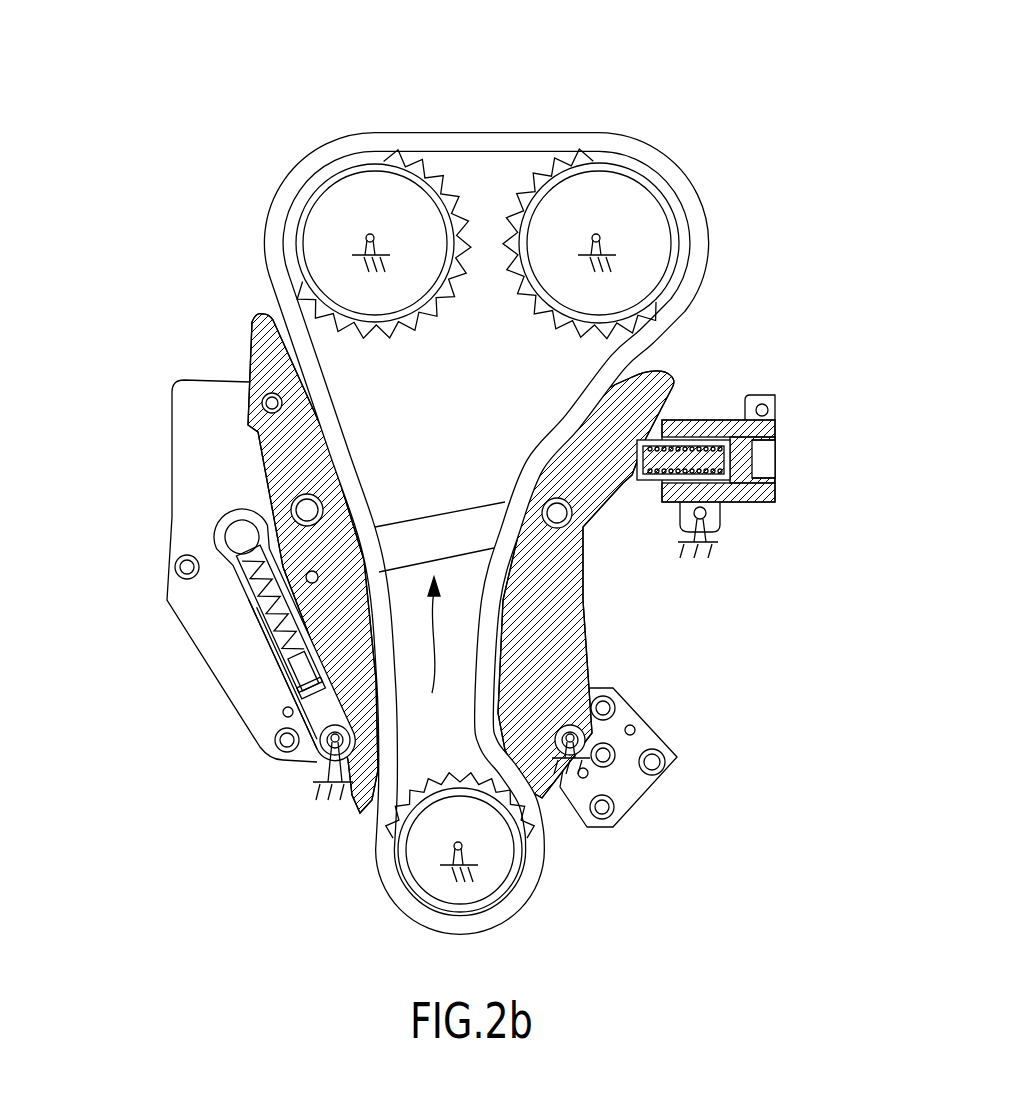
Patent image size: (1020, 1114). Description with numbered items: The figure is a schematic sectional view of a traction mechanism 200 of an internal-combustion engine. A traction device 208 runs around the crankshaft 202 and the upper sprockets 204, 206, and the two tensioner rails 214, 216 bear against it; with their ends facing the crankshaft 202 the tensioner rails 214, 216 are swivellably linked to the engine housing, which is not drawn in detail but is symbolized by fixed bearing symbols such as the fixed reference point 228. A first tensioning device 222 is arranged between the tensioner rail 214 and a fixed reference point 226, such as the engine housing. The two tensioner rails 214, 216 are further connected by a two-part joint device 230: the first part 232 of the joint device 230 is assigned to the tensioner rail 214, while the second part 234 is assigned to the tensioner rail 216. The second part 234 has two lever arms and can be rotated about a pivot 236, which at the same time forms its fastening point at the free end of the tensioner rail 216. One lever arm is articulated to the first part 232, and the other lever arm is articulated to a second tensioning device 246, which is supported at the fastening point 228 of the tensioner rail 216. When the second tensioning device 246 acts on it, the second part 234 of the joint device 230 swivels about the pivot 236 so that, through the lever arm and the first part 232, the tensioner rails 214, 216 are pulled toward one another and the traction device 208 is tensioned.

The traction mechanism 200 is at (237, 295).
The crankshaft 202 is at (430, 866).
The camshaft sprocket 204 is at (627, 197).
The camshaft sprocket 206 is at (338, 213).
The traction device 208 is at (498, 145).
The tensioner rail 214 is at (565, 648).
The tensioner rail 216 is at (280, 448).
The first tensioning device 222 is at (767, 438).
The fixed reference point 226 is at (702, 535).
The fixed reference point 228 is at (320, 783).
The joint device 230 is at (433, 656).
The first part of the joint device 232 is at (459, 530).
The second part of the joint device 234 is at (250, 537).
The pivot 236 is at (305, 510).
The second tensioning device 246 is at (263, 620).